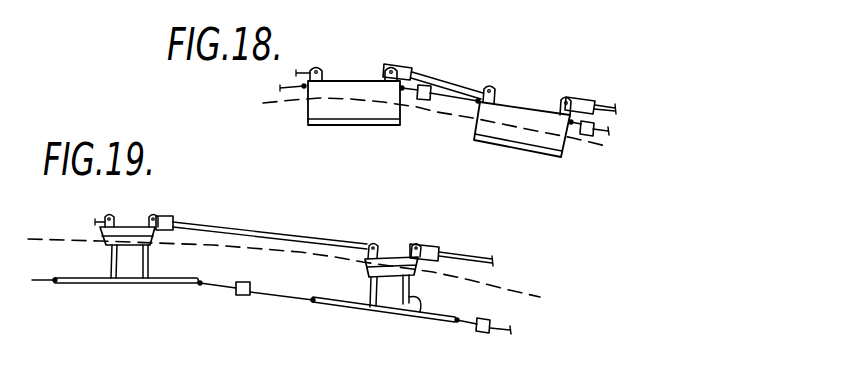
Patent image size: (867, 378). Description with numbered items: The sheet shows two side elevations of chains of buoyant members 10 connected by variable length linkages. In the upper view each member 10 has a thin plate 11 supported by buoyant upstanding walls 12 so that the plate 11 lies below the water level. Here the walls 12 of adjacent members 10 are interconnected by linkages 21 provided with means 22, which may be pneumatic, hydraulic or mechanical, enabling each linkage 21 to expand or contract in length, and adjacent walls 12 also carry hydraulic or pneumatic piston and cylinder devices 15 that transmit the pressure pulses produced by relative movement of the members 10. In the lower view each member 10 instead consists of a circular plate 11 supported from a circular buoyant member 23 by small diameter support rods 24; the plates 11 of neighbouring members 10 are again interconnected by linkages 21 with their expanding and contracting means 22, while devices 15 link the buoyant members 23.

In FIG. 18, the buoyant member 10 is at (448, 102).
In FIG. 19, the buoyant member 10 is at (269, 267).
In FIG. 18, the plate 11 is at (353, 138).
In FIG. 19, the plate 11 is at (115, 300).
In FIG. 18, the upstanding wall 12 is at (348, 79).
In FIG. 18, the piston and cylinder device 15 is at (433, 66).
In FIG. 19, the piston and cylinder device 15 is at (261, 215).
In FIG. 18, the linkage 21 is at (512, 137).
In FIG. 19, the linkage 21 is at (363, 324).
In FIG. 18, the means enabling the linkage to expand or contract 22 is at (472, 137).
In FIG. 19, the means enabling the linkage to expand or contract 22 is at (347, 324).
In FIG. 19, the circular buoyant member 23 is at (126, 214).
In FIG. 19, the support rod 24 is at (104, 283).